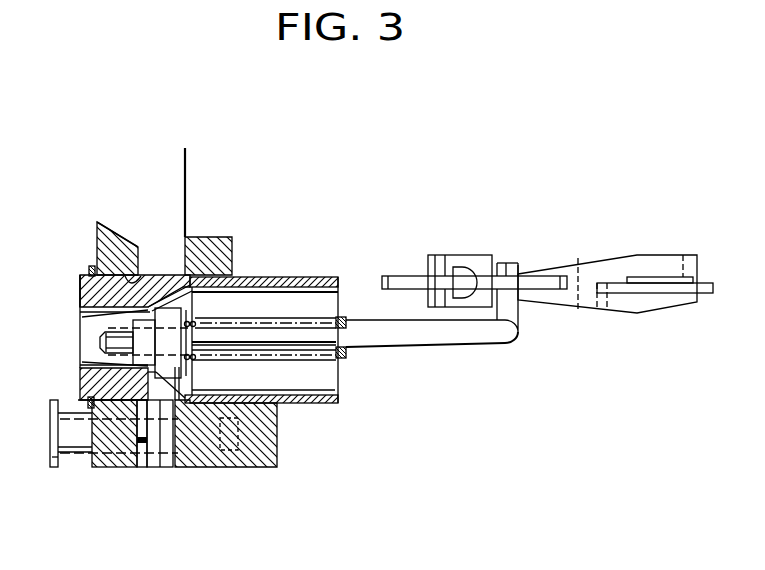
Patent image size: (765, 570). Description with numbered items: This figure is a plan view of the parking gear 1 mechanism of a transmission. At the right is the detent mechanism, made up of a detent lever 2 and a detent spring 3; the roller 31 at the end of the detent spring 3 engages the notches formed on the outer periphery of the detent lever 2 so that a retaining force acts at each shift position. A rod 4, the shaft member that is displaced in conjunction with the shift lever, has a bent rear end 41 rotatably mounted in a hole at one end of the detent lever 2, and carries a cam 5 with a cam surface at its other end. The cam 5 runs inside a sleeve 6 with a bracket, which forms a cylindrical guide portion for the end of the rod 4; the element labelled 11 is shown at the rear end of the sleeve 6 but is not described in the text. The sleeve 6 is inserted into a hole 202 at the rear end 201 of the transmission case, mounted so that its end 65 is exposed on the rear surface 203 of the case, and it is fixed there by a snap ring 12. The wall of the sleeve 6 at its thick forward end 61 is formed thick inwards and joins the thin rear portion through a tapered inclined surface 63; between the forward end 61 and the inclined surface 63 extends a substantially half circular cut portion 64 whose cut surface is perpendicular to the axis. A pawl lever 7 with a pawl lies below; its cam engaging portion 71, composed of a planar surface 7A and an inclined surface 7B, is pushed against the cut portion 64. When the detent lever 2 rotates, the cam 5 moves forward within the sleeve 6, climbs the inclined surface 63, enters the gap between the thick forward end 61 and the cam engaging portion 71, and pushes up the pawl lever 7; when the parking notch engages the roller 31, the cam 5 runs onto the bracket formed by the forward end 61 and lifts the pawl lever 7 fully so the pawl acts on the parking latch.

The parking gear 1 is at (130, 274).
The snap ring 12 is at (88, 268).
The rear end 201 is at (116, 232).
The hole 202 is at (149, 274).
The rear surface 203 is at (95, 226).
The inclined surface 63 is at (200, 300).
The sleeve 6 is at (272, 277).
The passage 11 is at (303, 320).
The end 65 is at (80, 296).
The cam 5 is at (133, 327).
The planar surface 7A is at (112, 393).
The inclined surface 7B is at (178, 385).
The rod 4 is at (437, 346).
The detent lever 2 is at (392, 275).
The roller 31 is at (430, 271).
The rear end 41 is at (517, 273).
The detent spring 3 is at (598, 268).
The forward end 61 is at (110, 447).
The pawl lever 7 is at (126, 450).
The cam engaging portion 71 is at (157, 402).
The cut portion 64 is at (200, 437).